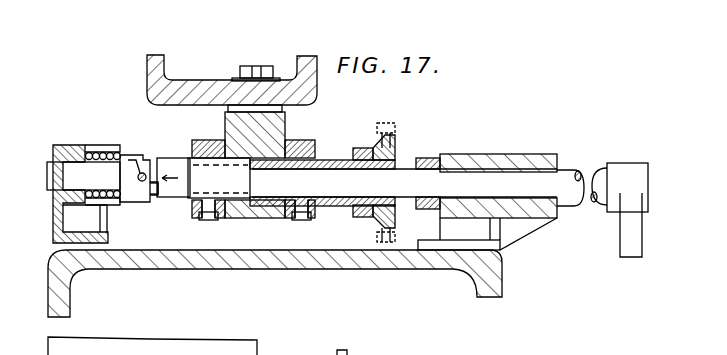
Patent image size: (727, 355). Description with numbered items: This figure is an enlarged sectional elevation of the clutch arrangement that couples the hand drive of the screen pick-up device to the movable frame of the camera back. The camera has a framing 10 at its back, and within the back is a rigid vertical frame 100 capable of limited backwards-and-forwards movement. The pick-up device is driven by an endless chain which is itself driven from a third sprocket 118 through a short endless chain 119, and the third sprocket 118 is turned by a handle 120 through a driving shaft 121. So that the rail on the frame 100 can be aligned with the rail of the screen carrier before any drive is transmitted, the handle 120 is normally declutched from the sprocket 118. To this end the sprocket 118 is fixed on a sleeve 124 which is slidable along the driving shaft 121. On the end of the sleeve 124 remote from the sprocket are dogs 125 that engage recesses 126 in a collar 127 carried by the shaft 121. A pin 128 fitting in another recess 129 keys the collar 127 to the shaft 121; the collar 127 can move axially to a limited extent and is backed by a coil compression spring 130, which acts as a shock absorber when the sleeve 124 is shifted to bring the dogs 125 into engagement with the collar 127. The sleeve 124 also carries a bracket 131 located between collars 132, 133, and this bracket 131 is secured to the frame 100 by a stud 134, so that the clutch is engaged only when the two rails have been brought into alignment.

The framing 10 is at (204, 252).
The rigid vertical frame 100 is at (160, 68).
The third sprocket 118 is at (396, 144).
The short endless chain 119 is at (390, 244).
The handle 120 is at (623, 248).
The driving shaft 121 is at (492, 172).
The sleeve 124 is at (337, 160).
The dogs 125 is at (188, 158).
The recesses 126 is at (160, 193).
The collar 127 is at (143, 156).
The pin 128 is at (142, 181).
The recess 129 is at (139, 173).
The coil compression spring 130 is at (58, 210).
The bracket 131 is at (250, 218).
The collar 132 is at (218, 220).
The collar 133 is at (305, 220).
The stud 134 is at (282, 48).